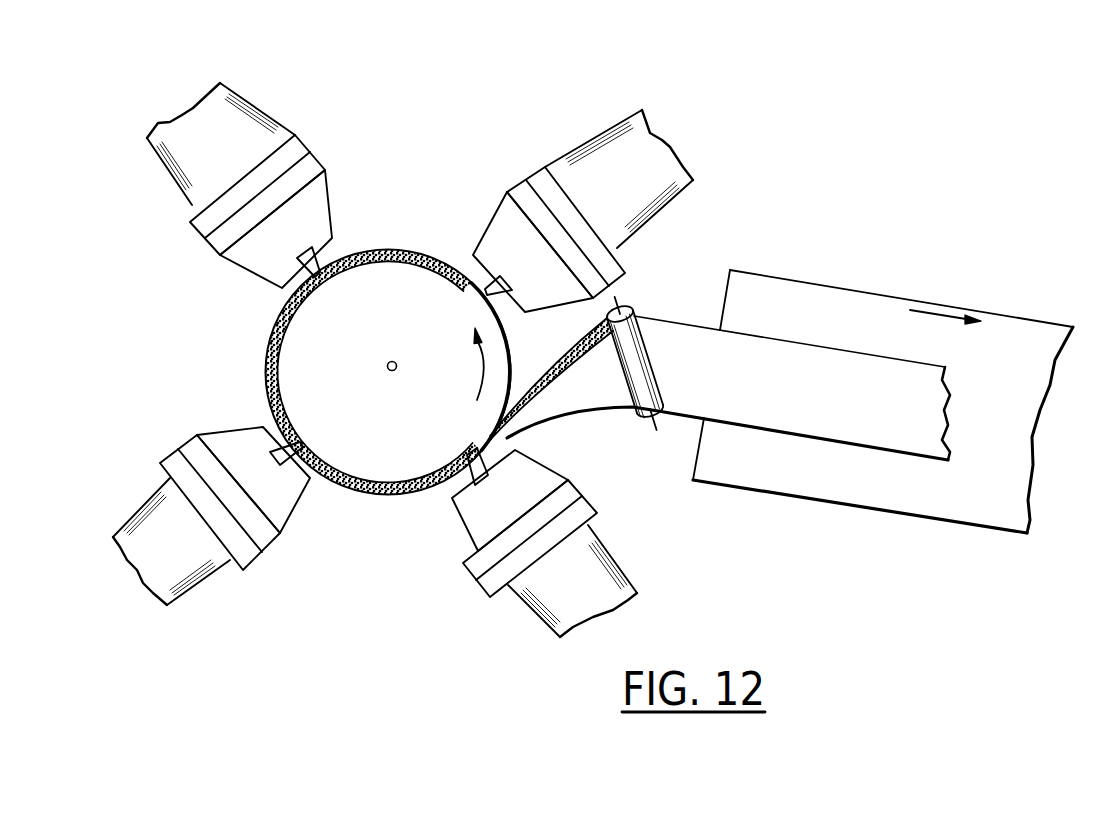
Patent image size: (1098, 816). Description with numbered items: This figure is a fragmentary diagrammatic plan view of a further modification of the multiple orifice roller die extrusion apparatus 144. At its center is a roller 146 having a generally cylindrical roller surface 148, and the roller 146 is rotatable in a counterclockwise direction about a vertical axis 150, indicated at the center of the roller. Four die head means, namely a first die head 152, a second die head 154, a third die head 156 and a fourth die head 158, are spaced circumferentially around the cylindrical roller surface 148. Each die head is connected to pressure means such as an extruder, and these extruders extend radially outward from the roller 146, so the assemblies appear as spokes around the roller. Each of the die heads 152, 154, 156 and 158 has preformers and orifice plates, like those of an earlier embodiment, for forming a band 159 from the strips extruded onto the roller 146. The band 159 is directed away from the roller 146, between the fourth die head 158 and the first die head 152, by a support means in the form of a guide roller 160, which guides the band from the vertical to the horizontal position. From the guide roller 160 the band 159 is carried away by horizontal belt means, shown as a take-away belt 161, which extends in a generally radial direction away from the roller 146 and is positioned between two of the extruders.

The multiple orifice roller die extrusion apparatus 144 is at (403, 150).
The roller 146 is at (297, 348).
The cylindrical roller surface 148 is at (507, 342).
The vertical axis 150 is at (393, 361).
The first die head 152 is at (493, 240).
The second die head 154 is at (263, 267).
The third die head 156 is at (285, 515).
The fourth die head 158 is at (478, 515).
The band 159 is at (933, 395).
The guide roller 160 is at (655, 321).
The take-away belt 161 is at (877, 492).